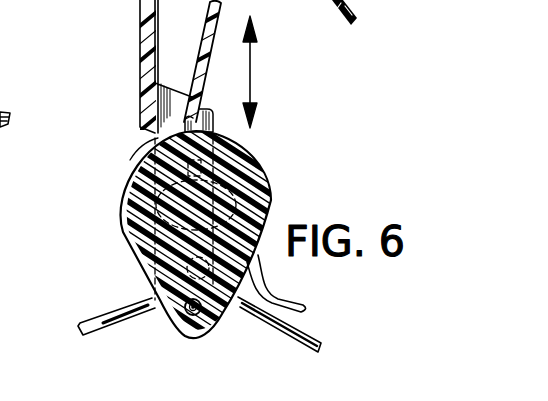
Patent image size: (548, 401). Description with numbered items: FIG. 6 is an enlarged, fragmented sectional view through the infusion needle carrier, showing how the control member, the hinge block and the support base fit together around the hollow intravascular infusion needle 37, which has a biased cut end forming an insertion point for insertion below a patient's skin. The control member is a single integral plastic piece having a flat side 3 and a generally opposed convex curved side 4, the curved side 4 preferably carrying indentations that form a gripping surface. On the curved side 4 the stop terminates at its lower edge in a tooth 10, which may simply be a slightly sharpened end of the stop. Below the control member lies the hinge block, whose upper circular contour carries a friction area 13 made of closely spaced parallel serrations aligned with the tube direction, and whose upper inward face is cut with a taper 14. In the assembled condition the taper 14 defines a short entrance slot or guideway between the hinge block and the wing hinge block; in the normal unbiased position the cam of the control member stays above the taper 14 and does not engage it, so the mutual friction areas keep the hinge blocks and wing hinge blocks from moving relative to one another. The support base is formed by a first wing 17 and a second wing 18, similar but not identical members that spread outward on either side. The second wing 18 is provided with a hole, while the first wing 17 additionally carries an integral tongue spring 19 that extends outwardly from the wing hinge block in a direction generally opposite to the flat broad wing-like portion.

The flat side 3 is at (142, 35).
The convex curved side 4 is at (200, 42).
The tooth 10 is at (208, 110).
The friction area 13 is at (238, 153).
The taper 14 is at (135, 153).
The first wing 17 is at (117, 312).
The second wing 18 is at (316, 332).
The tongue spring 19 is at (279, 305).
The hollow intravascular infusion needle 37 is at (218, 333).